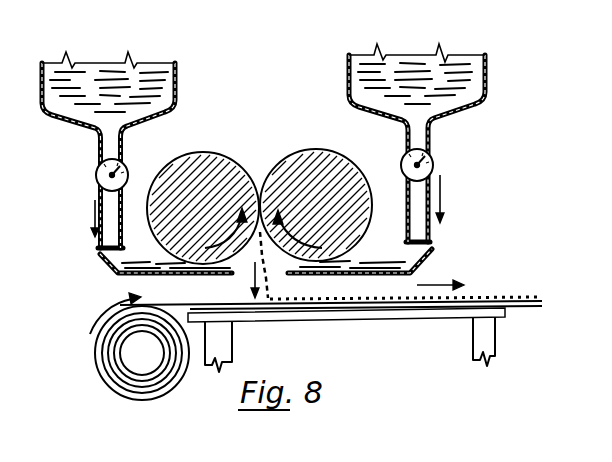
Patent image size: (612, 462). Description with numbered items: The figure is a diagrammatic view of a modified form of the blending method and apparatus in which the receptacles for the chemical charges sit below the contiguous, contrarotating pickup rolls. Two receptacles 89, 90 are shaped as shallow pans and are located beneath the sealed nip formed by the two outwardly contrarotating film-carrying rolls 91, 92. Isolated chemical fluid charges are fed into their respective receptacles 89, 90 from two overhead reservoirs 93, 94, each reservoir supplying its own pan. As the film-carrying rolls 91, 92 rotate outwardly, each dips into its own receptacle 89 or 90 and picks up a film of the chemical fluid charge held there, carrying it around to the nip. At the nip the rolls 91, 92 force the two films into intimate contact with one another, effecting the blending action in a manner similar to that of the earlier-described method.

The receptacle 89 is at (100, 266).
The receptacle 90 is at (433, 257).
The film-carrying roll 91 is at (216, 178).
The film-carrying roll 92 is at (304, 176).
The reservoir 93 is at (148, 70).
The reservoir 94 is at (444, 75).